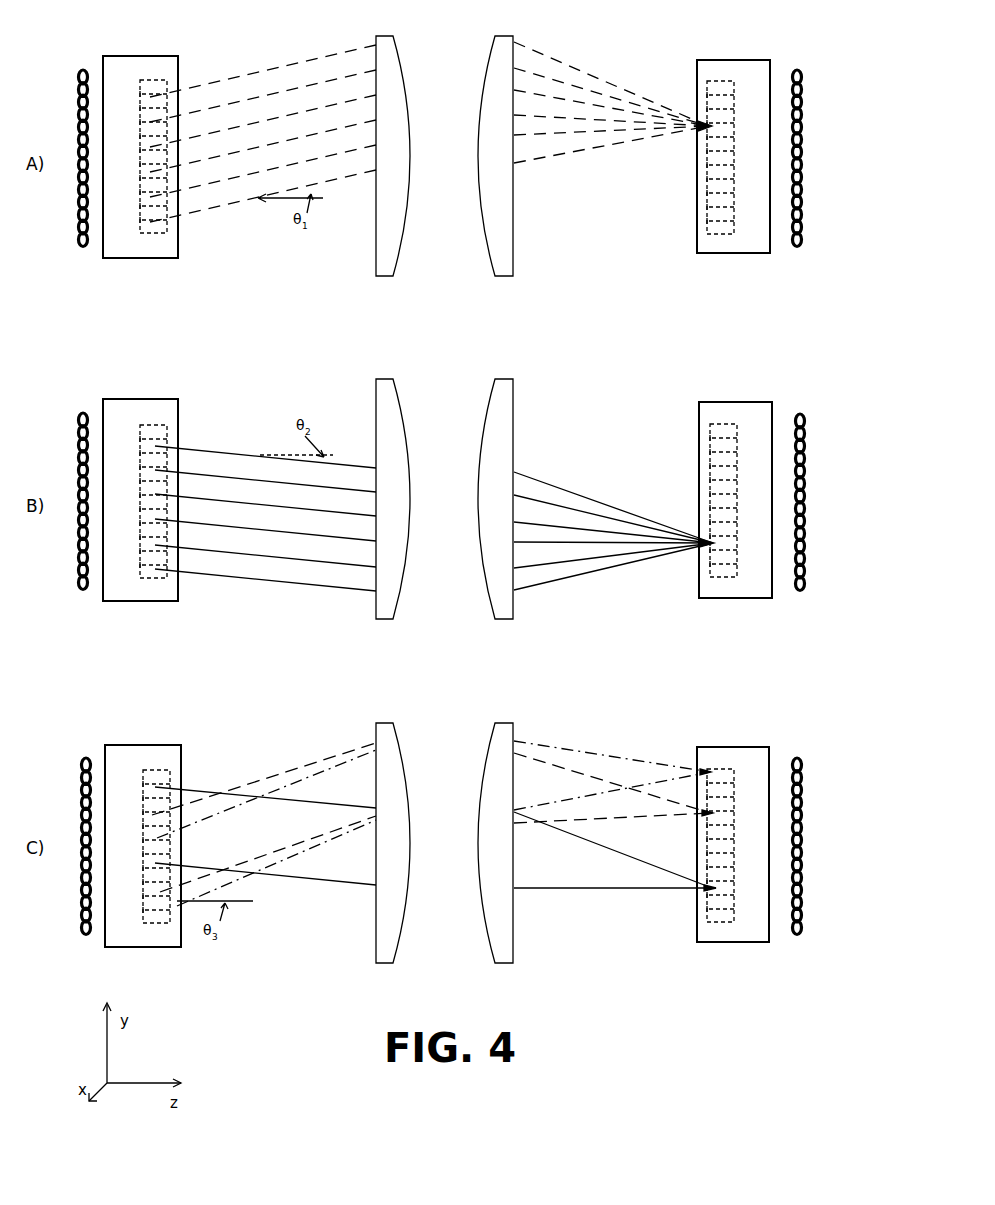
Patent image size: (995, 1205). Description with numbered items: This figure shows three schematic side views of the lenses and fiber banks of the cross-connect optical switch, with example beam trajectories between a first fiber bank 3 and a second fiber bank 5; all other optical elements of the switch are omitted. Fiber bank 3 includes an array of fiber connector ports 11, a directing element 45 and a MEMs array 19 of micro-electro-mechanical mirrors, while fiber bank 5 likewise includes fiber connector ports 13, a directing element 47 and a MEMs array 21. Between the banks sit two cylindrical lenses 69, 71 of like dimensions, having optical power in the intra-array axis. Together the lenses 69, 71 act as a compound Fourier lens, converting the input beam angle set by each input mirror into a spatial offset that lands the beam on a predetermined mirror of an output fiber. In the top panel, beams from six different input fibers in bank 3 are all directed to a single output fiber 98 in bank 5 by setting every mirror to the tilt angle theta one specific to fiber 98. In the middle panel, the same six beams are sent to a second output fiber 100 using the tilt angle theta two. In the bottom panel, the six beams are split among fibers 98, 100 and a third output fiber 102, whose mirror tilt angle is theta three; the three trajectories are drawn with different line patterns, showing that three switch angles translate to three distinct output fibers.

The input/output optical fiber bank 3 is at (114, 64).
The directing element 45 is at (133, 73).
The MEMs array 19 is at (162, 88).
The fiber connector ports 11 is at (83, 248).
The cylindrical lens 69 is at (390, 43).
The cylindrical lens 71 is at (503, 47).
The directing element 47 is at (735, 65).
The MEMs array 21 is at (713, 80).
The input/output optical fiber bank 5 is at (755, 73).
The fiber connector ports 13 is at (797, 72).
The output fiber 98 is at (708, 130).
The second output fiber 100 is at (712, 548).
The third output fiber 102 is at (710, 775).